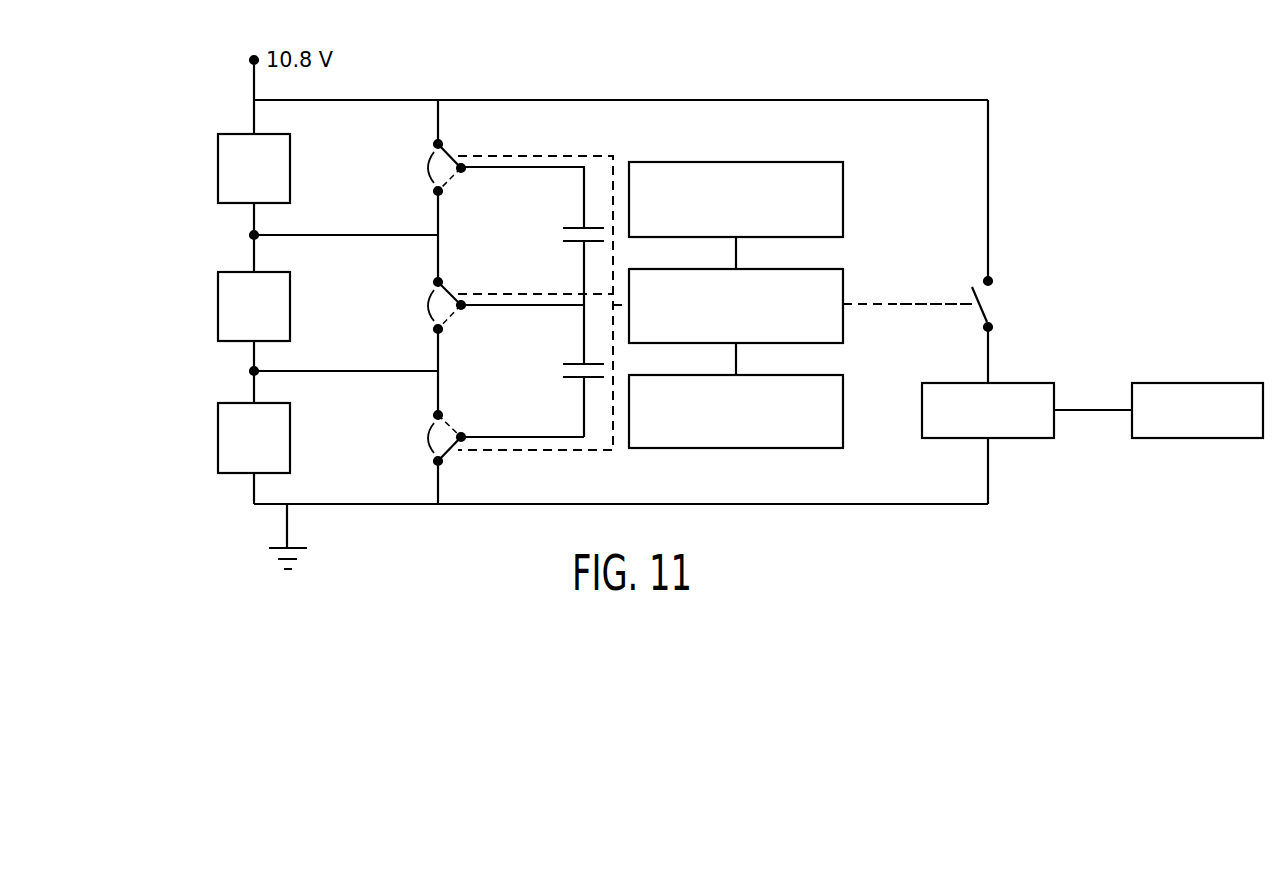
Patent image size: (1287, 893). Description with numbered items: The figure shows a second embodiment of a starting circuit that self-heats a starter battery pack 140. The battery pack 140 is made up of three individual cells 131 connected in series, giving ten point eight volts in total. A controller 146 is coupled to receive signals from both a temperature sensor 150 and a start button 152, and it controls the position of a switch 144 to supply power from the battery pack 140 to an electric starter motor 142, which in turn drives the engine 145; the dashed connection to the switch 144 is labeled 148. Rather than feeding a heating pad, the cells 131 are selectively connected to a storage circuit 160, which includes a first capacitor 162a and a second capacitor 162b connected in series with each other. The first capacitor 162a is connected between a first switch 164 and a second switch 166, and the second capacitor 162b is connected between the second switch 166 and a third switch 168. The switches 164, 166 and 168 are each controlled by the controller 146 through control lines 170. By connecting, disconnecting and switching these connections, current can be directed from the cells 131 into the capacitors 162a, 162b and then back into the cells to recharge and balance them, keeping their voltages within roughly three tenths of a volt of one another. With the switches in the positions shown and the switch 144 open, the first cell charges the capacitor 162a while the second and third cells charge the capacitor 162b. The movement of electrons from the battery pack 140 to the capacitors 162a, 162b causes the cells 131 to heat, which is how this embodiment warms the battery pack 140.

The individual cells 131 is at (290, 155).
The battery pack 140 is at (100, 313).
The electric starter motor 142 is at (1016, 438).
The switch 144 is at (985, 318).
The engine 145 is at (1198, 383).
The controller 146 is at (843, 293).
The control signal line 148 is at (868, 305).
The temperature sensor 150 is at (843, 412).
The start button 152 is at (843, 197).
The storage circuit 160 is at (608, 268).
The first capacitor 162a is at (575, 226).
The second capacitor 162b is at (575, 378).
The first switch 164 is at (447, 153).
The second switch 166 is at (447, 291).
The third switch 168 is at (447, 450).
The control lines 170 is at (587, 156).